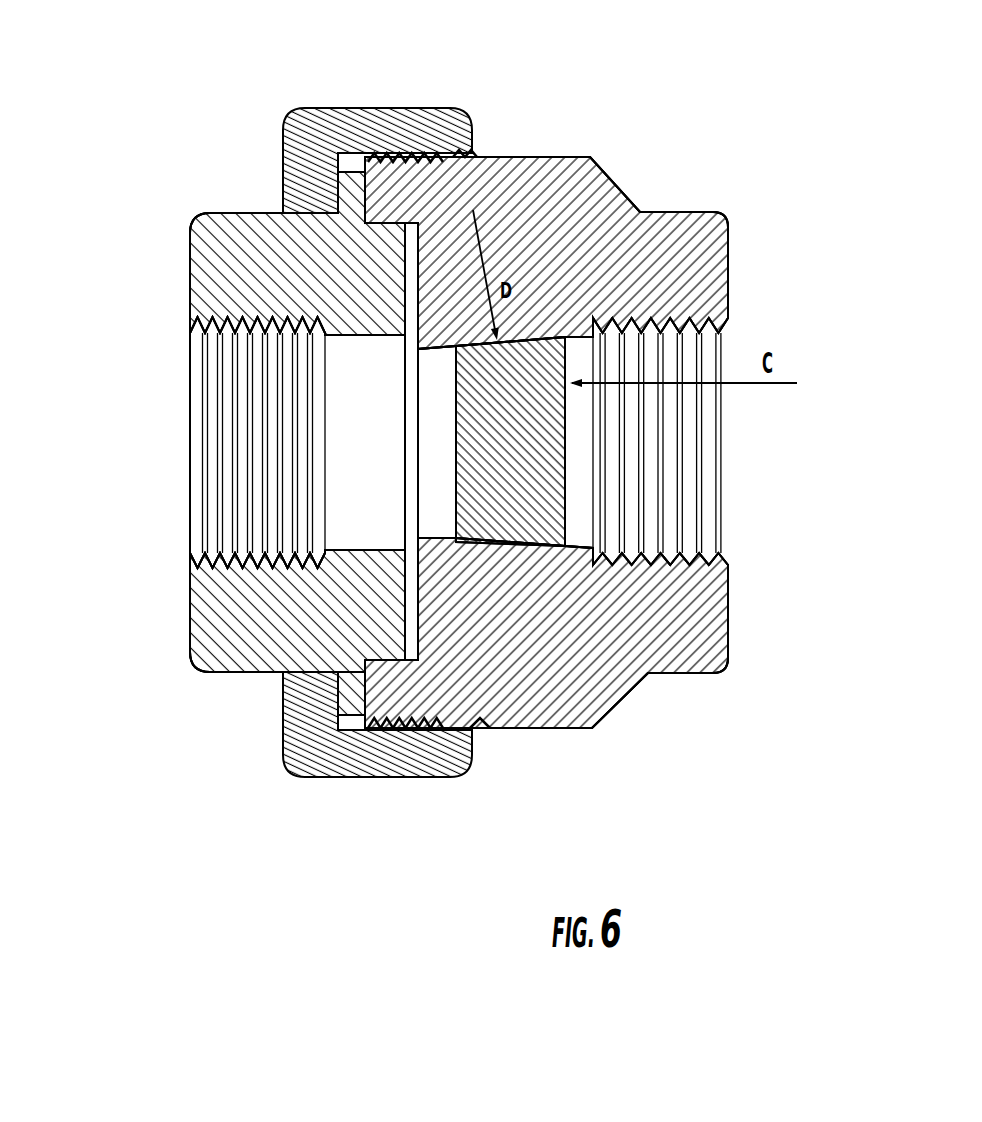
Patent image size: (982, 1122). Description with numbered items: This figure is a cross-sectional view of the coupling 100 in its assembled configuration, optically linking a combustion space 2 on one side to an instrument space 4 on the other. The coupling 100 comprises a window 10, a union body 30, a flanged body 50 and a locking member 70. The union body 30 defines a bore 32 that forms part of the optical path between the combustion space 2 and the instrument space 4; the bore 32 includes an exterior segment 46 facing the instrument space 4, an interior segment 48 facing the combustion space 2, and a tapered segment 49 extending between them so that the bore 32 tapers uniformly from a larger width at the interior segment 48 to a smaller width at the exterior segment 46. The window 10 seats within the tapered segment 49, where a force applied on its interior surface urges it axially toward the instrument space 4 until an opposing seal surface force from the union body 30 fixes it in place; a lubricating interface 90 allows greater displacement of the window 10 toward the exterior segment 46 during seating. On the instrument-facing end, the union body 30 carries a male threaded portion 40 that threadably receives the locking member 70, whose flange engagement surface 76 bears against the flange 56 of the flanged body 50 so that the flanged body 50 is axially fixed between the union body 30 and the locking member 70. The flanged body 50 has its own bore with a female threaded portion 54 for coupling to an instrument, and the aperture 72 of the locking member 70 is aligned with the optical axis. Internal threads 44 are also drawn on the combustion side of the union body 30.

The combustion space 2 is at (842, 462).
The instrument space 4 is at (36, 441).
The window 10 is at (548, 370).
The union body 30 is at (502, 190).
The bore 32 is at (448, 447).
The male threaded portion 40 is at (418, 152).
The internal threads of body 44 is at (672, 418).
The exterior segment 46 is at (437, 493).
The interior segment 48 is at (583, 500).
The tapered segment 49 is at (515, 480).
The flanged body 50 is at (308, 272).
The female threaded portion 54 is at (247, 475).
The flange 56 is at (352, 683).
The locking member 70 is at (310, 145).
The aperture 72 is at (373, 447).
The flange engagement surface 76 is at (357, 688).
The lubricating interface 90 is at (497, 543).
The coupling 100 is at (274, 872).